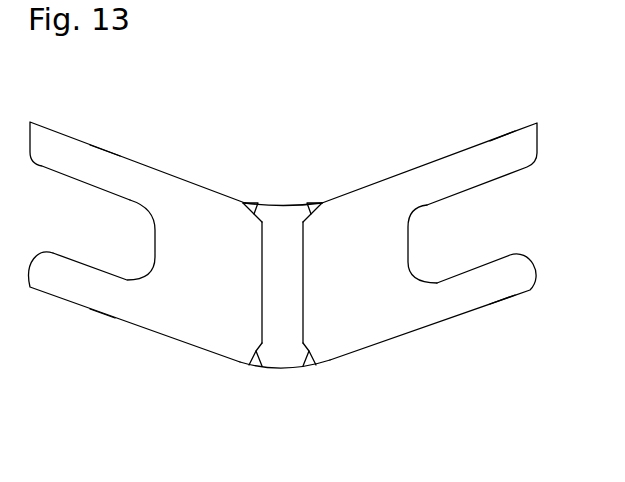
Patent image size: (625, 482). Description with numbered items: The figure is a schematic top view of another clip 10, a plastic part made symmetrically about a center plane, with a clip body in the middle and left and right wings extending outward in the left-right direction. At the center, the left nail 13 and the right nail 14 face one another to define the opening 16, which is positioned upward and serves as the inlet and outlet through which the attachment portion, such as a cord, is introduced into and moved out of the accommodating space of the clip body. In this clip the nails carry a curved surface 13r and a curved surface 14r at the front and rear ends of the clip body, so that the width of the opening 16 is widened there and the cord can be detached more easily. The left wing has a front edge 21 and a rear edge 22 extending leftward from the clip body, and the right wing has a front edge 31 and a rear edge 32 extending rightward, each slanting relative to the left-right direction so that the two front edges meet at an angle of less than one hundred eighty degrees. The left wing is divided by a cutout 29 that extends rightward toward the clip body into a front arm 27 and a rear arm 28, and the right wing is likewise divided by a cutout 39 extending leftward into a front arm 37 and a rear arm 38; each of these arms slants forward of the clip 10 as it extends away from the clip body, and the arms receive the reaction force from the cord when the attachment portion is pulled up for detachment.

The clip 10 is at (70, 96).
The left nail 13 is at (256, 288).
The curved surface 13r is at (245, 203).
The right nail 14 is at (308, 288).
The curved surface 14r is at (322, 203).
The opening 16 is at (279, 230).
The front edge 21 is at (194, 182).
The rear edge 22 is at (158, 339).
The front arm 27 is at (121, 162).
The rear arm 28 is at (105, 317).
The cutout 29 is at (118, 246).
The front edge 31 is at (428, 164).
The rear edge 32 is at (447, 325).
The front arm 37 is at (499, 138).
The rear arm 38 is at (502, 305).
The cutout 39 is at (473, 244).